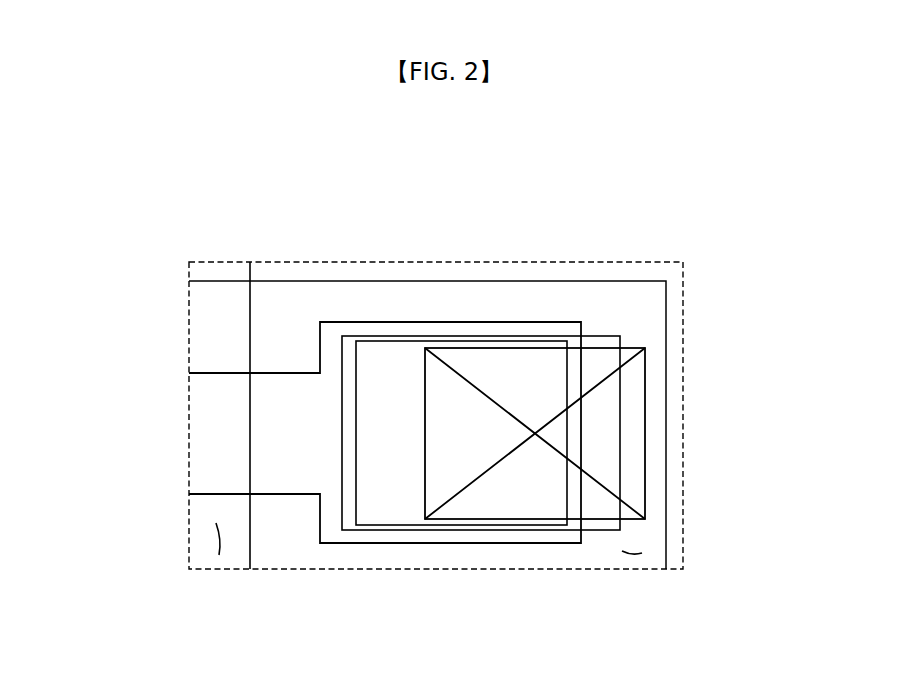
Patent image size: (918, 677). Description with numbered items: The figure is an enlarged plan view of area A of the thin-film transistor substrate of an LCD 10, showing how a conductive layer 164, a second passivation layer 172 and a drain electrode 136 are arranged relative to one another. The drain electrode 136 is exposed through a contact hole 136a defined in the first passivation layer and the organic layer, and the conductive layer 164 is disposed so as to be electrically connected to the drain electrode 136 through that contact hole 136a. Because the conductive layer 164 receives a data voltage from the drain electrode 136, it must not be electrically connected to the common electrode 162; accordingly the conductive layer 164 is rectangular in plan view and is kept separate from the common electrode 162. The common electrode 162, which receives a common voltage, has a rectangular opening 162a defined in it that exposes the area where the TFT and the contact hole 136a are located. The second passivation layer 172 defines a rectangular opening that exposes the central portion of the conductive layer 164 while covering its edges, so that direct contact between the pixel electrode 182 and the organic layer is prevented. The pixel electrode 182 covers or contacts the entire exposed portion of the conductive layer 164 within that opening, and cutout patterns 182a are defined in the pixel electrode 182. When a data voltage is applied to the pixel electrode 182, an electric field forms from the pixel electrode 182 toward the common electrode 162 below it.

The LCD 10 is at (426, 200).
The area A is at (557, 262).
The drain electrode 136 is at (282, 372).
The contact hole 136a is at (645, 372).
The common electrode 162 is at (666, 503).
The opening 162a is at (633, 553).
The conductive layer 164 is at (620, 430).
The second passivation layer 172 is at (396, 525).
The pixel electrode 182 is at (250, 513).
The cutout patterns 182a is at (216, 540).